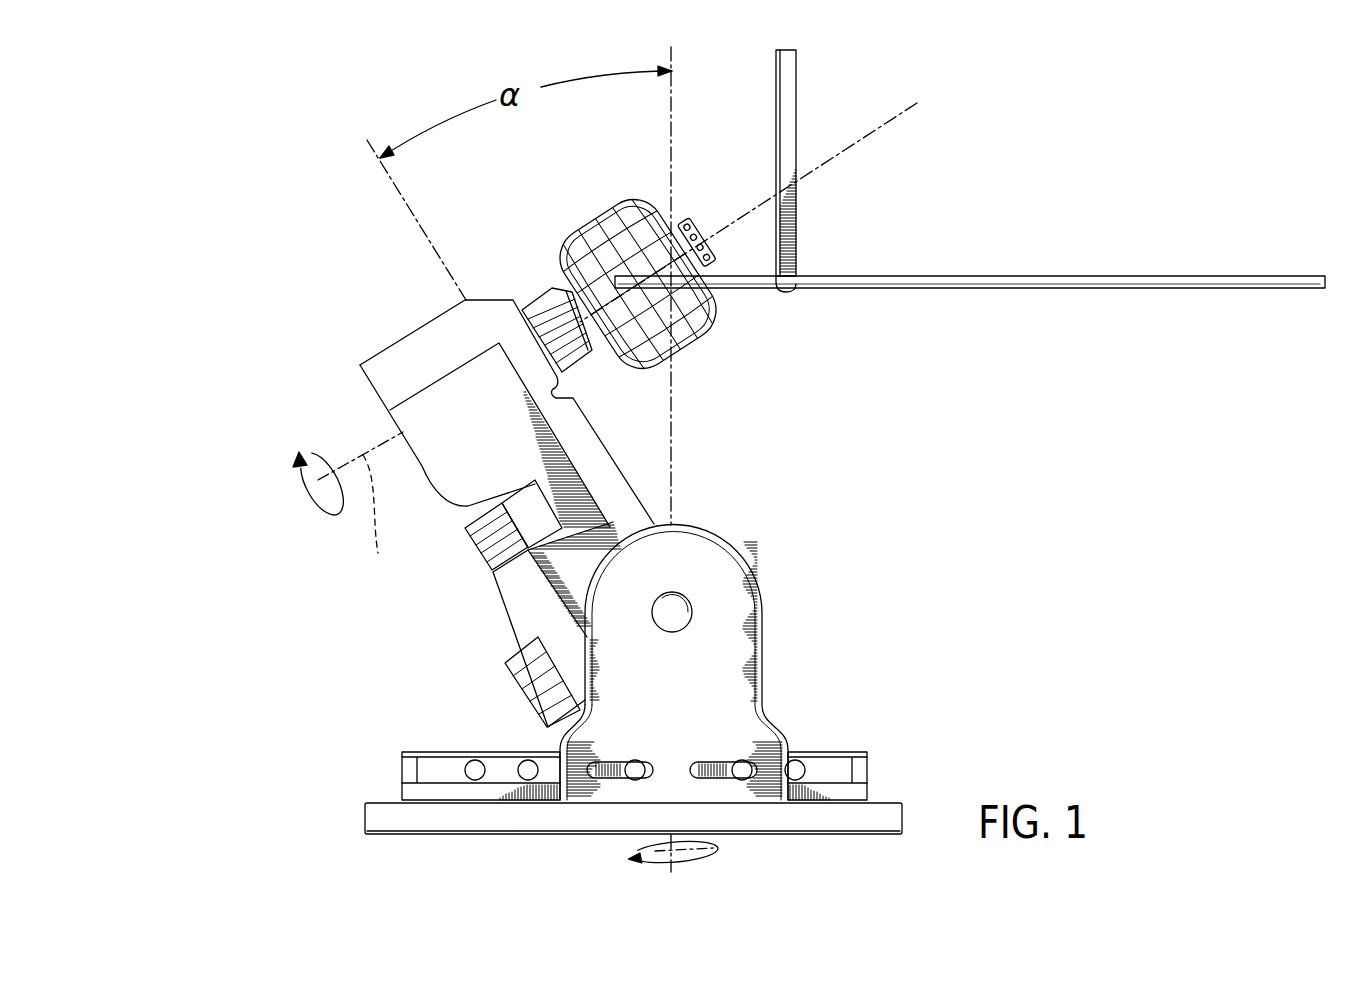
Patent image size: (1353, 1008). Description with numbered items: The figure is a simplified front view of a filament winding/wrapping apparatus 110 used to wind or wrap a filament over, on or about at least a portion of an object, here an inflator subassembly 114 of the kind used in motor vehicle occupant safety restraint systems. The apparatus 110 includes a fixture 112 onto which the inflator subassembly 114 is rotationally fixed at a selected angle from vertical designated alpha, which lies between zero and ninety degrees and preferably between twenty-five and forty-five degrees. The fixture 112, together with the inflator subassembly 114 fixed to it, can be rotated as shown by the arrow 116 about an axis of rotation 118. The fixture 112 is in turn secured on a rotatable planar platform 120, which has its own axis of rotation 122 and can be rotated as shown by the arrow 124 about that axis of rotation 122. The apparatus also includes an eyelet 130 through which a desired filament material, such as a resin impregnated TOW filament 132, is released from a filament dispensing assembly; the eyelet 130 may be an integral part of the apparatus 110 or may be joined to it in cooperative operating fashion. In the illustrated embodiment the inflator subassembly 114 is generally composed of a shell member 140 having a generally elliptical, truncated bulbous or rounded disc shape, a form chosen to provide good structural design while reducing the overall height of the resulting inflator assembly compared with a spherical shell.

The filament winding/wrapping apparatus 110 is at (945, 178).
The fixture 112 is at (543, 307).
The inflator subassembly 114 is at (605, 227).
The arrow 116 is at (318, 492).
The axis of rotation 118 is at (379, 521).
The rotatable planar platform 120 is at (862, 716).
The axis of rotation 122 is at (723, 858).
The arrow 124 is at (655, 862).
The eyelet 130 is at (787, 293).
The resin impregnated TOW filament 132 is at (945, 290).
The shell member 140 is at (663, 340).